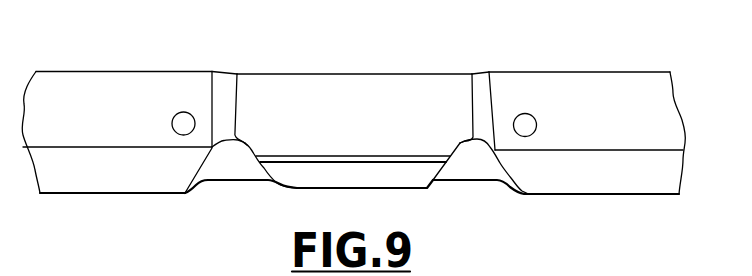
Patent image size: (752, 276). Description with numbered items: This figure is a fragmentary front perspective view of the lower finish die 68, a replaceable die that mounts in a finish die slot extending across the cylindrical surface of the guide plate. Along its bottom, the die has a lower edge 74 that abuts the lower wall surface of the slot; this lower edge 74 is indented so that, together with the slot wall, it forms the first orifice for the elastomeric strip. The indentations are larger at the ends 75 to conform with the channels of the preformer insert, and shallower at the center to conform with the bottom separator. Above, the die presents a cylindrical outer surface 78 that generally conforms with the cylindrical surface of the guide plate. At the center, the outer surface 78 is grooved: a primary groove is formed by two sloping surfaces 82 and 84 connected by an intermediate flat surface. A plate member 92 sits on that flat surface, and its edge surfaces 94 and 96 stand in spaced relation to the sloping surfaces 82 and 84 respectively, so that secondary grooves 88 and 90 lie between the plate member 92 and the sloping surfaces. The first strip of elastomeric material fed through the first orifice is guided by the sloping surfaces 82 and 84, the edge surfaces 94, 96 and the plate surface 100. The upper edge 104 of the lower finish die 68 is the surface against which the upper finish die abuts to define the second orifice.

The lower finish die 68 is at (662, 103).
The lower edge 74 is at (613, 175).
The ends 75 is at (213, 170).
The cylindrical outer surface 78 is at (675, 132).
The sloping surface 82 is at (222, 100).
The sloping surface 84 is at (478, 87).
The secondary groove 88 is at (224, 104).
The secondary groove 90 is at (483, 103).
The plate member 92 is at (380, 87).
The edge surface 94 is at (231, 143).
The edge surface 96 is at (460, 143).
The plate surface 100 is at (320, 85).
The upper edge 104 is at (125, 72).